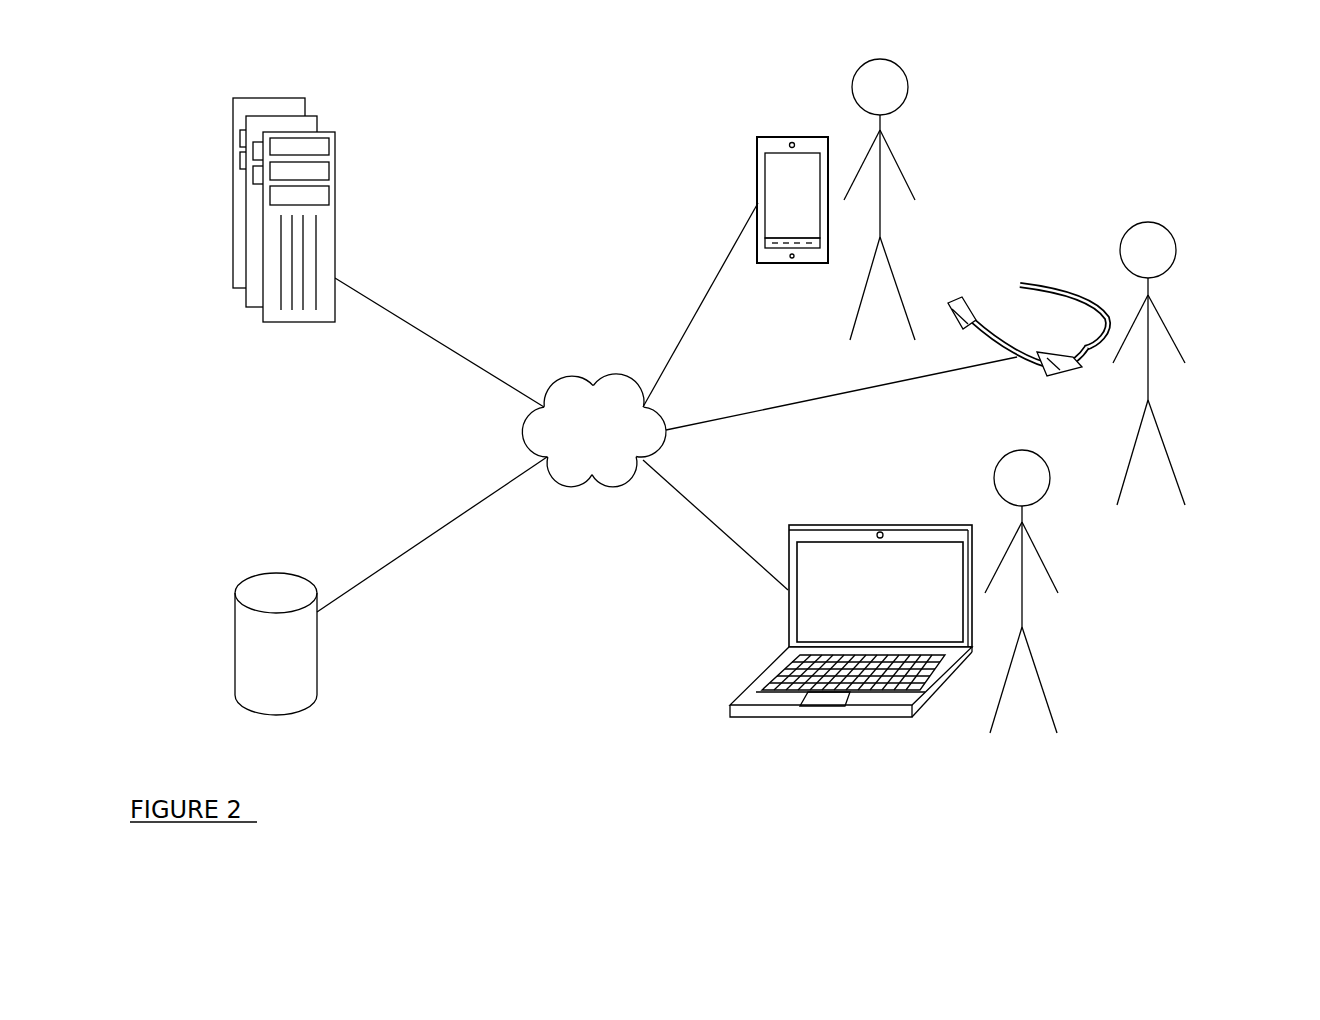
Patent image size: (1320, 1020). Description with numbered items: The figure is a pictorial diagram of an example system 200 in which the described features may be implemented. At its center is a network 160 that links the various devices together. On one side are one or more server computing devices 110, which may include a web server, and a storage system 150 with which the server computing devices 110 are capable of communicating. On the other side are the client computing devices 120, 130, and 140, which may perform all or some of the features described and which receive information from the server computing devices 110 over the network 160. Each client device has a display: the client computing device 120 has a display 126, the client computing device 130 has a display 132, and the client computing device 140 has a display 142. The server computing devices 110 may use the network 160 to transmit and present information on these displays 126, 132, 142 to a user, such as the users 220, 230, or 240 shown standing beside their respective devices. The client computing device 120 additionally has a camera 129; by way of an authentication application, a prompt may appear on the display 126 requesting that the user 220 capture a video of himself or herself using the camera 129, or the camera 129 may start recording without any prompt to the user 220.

The system 200 is at (212, 765).
The server computing device 110 is at (337, 176).
The client computing device 120 is at (736, 155).
The display 126 is at (758, 200).
The camera 129 is at (788, 142).
The client computing device 130 is at (1028, 323).
The display 132 is at (1068, 375).
The client computing device 140 is at (824, 621).
The display 142 is at (787, 642).
The storage system 150 is at (318, 666).
The network 160 is at (594, 430).
The user 220 is at (910, 192).
The user 230 is at (1183, 352).
The user 240 is at (1055, 583).